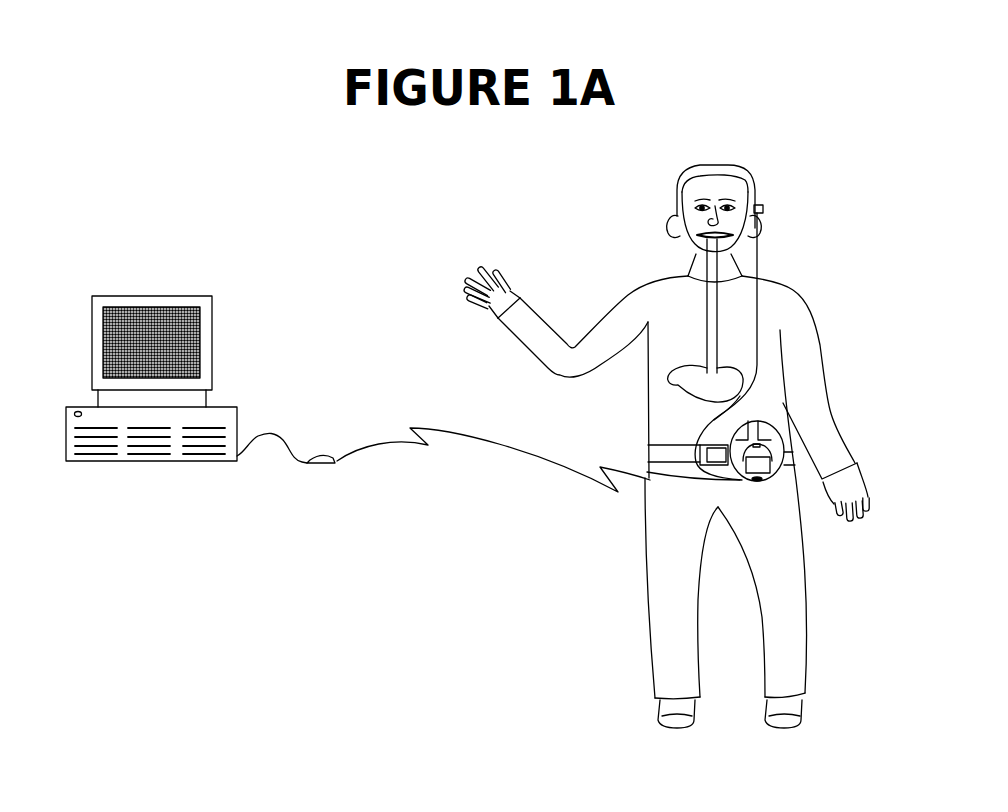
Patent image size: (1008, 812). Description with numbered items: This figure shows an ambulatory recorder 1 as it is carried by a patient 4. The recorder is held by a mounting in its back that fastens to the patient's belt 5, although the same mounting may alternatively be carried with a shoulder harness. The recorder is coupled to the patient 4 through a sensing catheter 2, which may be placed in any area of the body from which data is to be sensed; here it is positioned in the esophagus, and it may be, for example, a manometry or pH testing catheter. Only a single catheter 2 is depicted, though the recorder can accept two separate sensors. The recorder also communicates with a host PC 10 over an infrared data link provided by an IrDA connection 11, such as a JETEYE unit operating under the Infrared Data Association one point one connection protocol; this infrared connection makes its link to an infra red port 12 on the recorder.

The ambulatory recorder 1 is at (820, 492).
The sensing catheter 2 is at (758, 333).
The patient 4 is at (680, 327).
The belt 5 is at (667, 445).
The host PC 10 is at (155, 293).
The IrDA connection 11 is at (326, 456).
The infra red port 12 is at (758, 482).